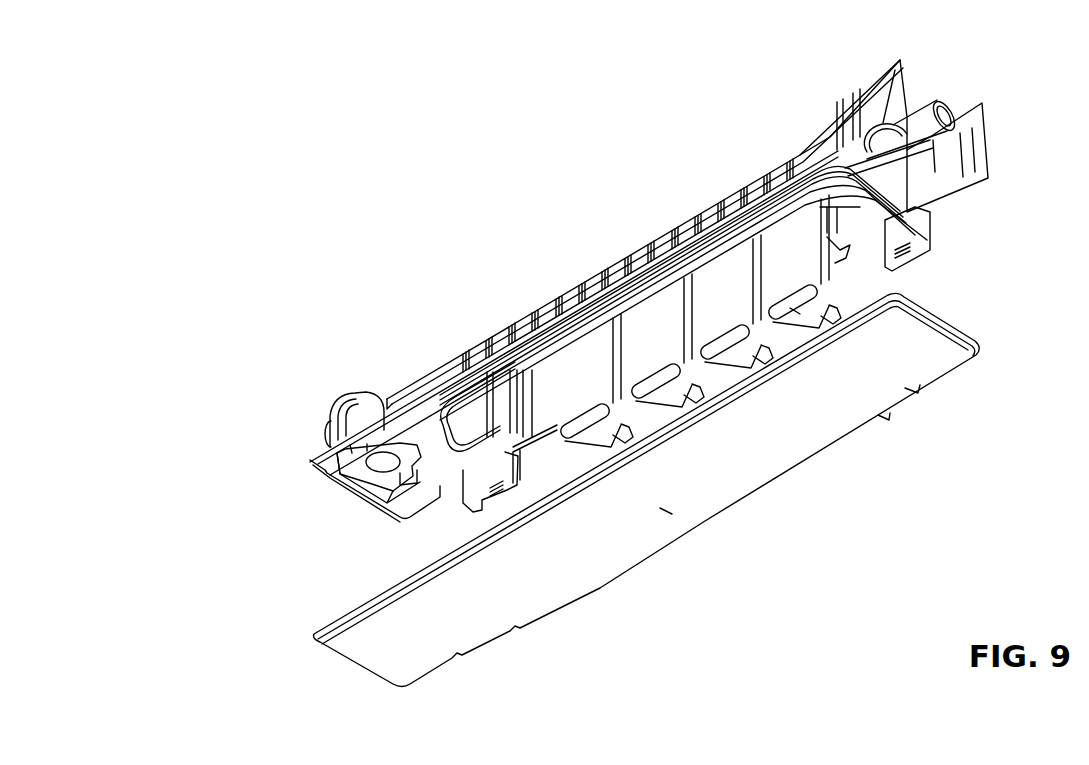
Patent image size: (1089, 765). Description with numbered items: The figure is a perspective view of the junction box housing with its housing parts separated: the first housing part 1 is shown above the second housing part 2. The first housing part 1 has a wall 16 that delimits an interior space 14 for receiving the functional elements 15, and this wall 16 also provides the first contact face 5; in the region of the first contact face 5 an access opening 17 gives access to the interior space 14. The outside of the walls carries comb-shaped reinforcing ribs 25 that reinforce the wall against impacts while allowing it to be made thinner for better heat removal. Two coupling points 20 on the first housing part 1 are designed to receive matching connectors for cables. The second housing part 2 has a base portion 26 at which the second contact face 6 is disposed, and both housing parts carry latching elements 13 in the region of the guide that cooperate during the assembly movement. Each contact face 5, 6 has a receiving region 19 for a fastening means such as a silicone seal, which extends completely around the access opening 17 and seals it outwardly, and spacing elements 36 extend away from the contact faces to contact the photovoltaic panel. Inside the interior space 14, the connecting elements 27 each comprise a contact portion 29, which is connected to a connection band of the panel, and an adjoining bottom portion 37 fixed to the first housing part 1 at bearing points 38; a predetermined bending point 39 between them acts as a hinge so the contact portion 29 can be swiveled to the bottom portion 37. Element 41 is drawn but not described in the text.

The first housing part 1 is at (645, 250).
The second housing part 2 is at (768, 472).
The first contact face 5 is at (387, 437).
The second contact face 6 is at (318, 620).
The latching elements 13 is at (925, 257).
The interior space 14 is at (783, 230).
The functional elements 15 is at (590, 383).
The wall 16 is at (725, 207).
The access opening 17 is at (860, 250).
The receiving region 19 is at (430, 407).
The coupling points 20 is at (950, 108).
The reinforcing ribs 25 is at (533, 306).
The base portion 26 is at (667, 510).
The connecting elements 27 is at (695, 393).
The contact portion 29 is at (600, 440).
The spacing elements 36 is at (343, 483).
The bottom portion 37 is at (560, 432).
The bearing points 38 is at (685, 258).
The predetermined bending point 39 is at (432, 380).
The latch 41 is at (795, 308).